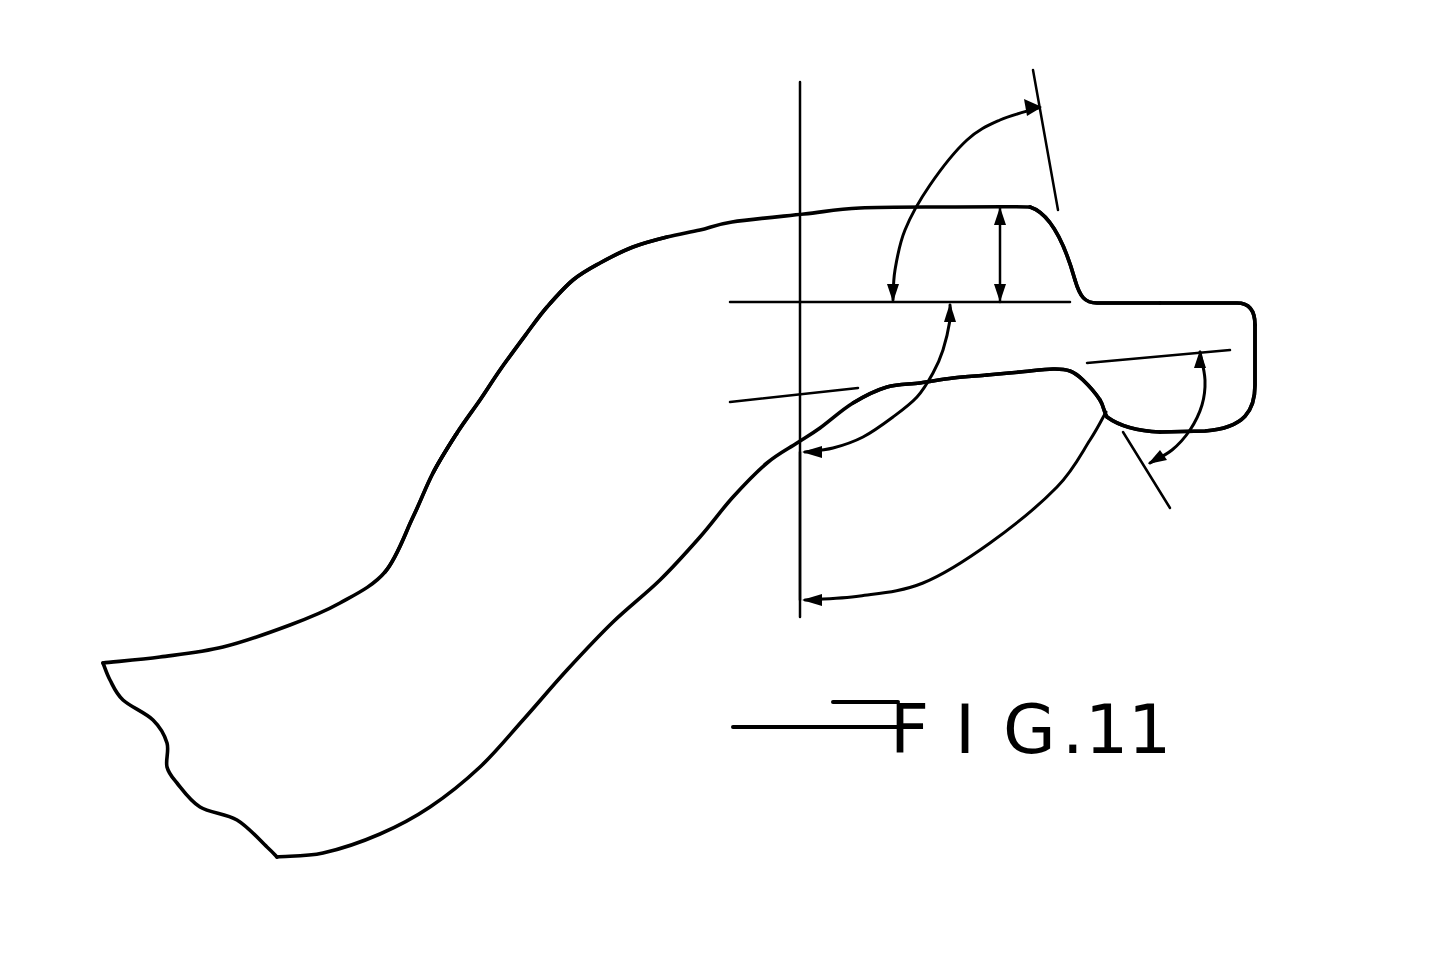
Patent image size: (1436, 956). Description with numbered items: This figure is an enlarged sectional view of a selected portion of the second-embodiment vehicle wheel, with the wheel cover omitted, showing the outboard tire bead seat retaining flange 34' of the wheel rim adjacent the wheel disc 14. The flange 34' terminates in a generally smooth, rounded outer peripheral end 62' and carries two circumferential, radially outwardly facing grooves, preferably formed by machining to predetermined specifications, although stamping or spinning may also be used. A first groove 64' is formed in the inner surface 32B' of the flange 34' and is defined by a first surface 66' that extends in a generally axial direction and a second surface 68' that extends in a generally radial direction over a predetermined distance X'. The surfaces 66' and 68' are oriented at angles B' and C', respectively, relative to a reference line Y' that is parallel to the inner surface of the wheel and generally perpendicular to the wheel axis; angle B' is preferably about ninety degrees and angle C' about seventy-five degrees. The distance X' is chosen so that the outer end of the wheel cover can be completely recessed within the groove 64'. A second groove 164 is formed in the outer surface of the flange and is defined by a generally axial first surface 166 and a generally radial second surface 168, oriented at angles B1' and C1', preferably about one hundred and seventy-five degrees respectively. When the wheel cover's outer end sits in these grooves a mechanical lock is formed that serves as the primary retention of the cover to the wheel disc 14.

The wheel disc 14 is at (226, 640).
The outboard tire bead seat retaining flange 34' is at (497, 355).
The inner surface 32B' is at (343, 502).
The second surface 68' is at (1122, 198).
The first groove 64' is at (1158, 234).
The first surface 66' is at (1252, 270).
The outer peripheral end 62' is at (1287, 378).
The second surface 168 is at (1118, 366).
The first surface 166 is at (1013, 378).
The second groove 164 is at (973, 386).
The angle C' is at (952, 182).
The predetermined distance X' is at (966, 254).
The angle B' is at (879, 395).
The angle B1' is at (954, 523).
The angle C1' is at (1248, 408).
The reference line Y' is at (737, 561).